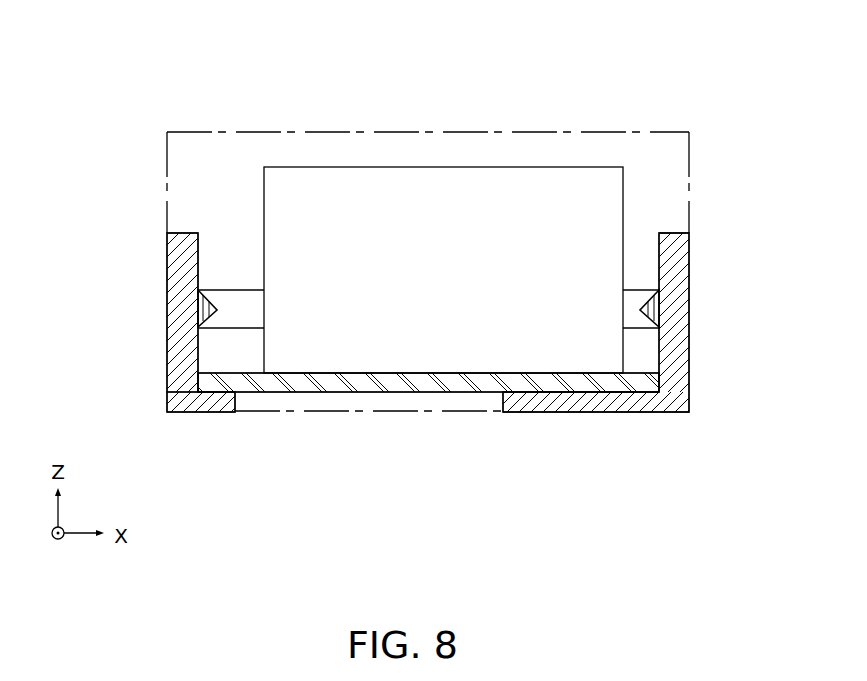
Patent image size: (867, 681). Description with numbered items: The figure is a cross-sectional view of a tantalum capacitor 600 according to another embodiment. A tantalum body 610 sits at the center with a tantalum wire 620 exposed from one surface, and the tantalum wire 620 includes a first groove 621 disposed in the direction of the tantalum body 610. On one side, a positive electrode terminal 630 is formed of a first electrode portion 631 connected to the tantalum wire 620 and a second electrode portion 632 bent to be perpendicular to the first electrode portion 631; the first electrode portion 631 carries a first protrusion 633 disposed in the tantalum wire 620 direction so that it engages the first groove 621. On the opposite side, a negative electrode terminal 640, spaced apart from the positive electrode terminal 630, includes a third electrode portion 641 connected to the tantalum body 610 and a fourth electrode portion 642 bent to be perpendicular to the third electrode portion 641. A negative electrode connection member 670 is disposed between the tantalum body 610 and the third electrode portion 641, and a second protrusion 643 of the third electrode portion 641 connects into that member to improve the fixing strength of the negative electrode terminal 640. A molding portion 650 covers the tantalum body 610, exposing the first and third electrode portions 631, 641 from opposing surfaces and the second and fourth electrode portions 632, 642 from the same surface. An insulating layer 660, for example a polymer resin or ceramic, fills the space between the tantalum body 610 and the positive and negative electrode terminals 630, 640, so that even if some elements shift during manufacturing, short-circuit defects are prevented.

The tantalum capacitor 600 is at (377, 32).
The tantalum body 610 is at (612, 203).
The tantalum wire 620 is at (228, 313).
The first groove 621 is at (223, 288).
The positive electrode terminal 630 is at (186, 427).
The first electrode portion 631 is at (167, 388).
The second electrode portion 632 is at (222, 413).
The first protrusion 633 is at (200, 305).
The negative electrode terminal 640 is at (671, 427).
The third electrode portion 641 is at (690, 267).
The fourth electrode portion 642 is at (633, 413).
The second protrusion 643 is at (662, 303).
The molding portion 650 is at (584, 124).
The insulating layer 660 is at (472, 385).
The negative electrode connection member 670 is at (632, 308).